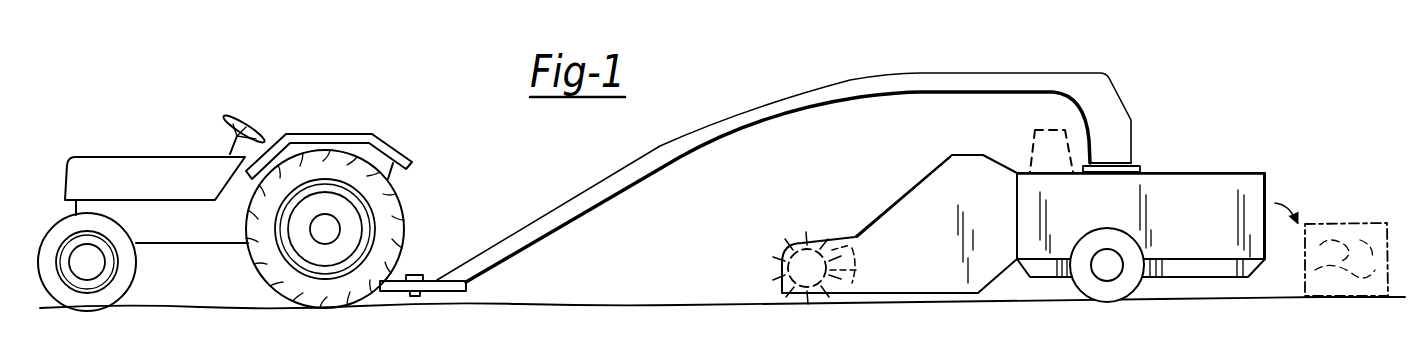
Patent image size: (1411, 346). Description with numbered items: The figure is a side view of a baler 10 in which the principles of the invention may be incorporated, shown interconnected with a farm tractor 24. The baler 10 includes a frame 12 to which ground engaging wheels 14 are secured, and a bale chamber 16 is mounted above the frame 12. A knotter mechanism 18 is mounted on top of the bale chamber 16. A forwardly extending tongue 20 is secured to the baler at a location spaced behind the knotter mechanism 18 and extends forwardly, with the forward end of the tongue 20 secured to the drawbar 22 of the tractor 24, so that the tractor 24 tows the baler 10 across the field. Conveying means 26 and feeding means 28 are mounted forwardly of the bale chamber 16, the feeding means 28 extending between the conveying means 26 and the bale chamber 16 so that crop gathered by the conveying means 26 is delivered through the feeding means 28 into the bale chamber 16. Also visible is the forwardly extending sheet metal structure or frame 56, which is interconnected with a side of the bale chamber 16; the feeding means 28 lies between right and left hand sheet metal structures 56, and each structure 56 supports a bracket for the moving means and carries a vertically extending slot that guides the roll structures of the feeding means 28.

The baler 10 is at (1210, 152).
The frame 12 is at (1045, 270).
The ground engaging wheels 14 is at (1115, 292).
The bale chamber 16 is at (1248, 180).
The knotter mechanism 18 is at (1024, 136).
The tongue 20 is at (597, 200).
The drawbar 22 is at (390, 294).
The tractor 24 is at (200, 131).
The conveying means 26 is at (773, 231).
The feeding means 28 is at (938, 300).
The sheet metal structure 56 is at (913, 205).